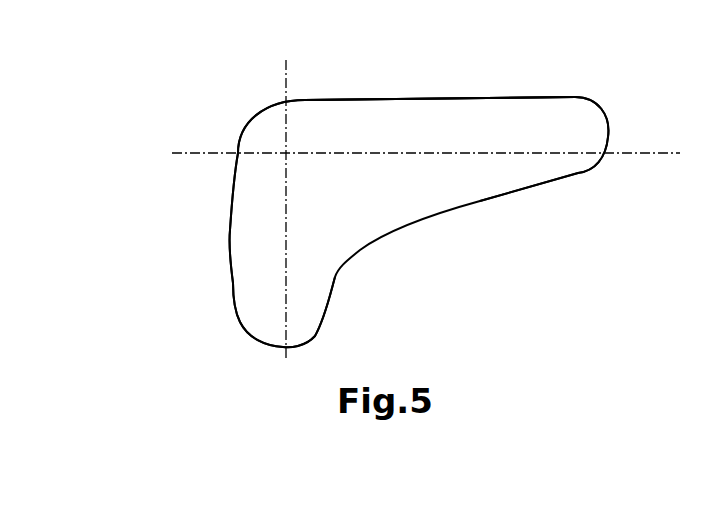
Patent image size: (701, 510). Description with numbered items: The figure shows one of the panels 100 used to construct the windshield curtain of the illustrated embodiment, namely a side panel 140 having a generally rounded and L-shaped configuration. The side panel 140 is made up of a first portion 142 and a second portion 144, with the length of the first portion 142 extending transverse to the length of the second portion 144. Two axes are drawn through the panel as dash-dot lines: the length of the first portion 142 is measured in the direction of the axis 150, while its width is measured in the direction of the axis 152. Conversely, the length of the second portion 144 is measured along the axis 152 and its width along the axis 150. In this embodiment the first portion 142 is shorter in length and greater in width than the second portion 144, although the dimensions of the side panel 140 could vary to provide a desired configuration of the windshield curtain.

The panels 100 is at (227, 92).
The side panel 140 is at (242, 71).
The first portion 142 is at (253, 287).
The second portion 144 is at (485, 128).
The axis 150 is at (286, 280).
The axis 152 is at (655, 152).